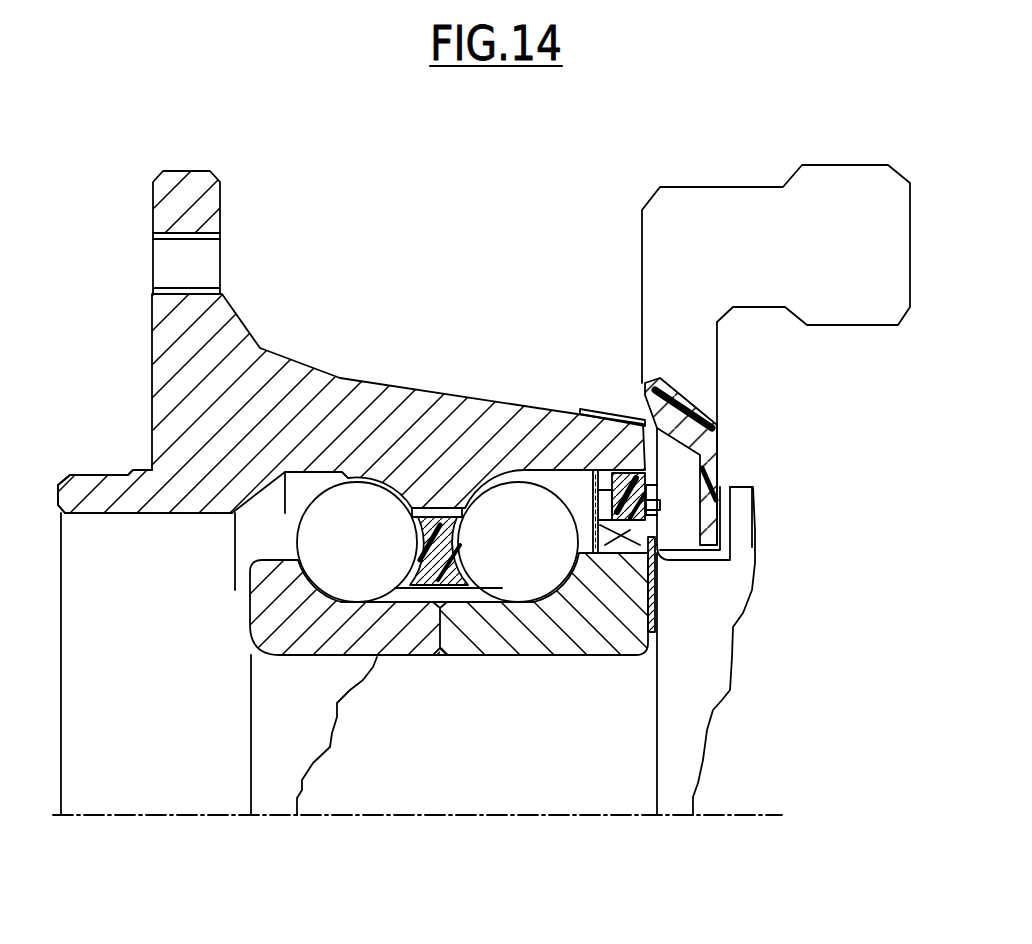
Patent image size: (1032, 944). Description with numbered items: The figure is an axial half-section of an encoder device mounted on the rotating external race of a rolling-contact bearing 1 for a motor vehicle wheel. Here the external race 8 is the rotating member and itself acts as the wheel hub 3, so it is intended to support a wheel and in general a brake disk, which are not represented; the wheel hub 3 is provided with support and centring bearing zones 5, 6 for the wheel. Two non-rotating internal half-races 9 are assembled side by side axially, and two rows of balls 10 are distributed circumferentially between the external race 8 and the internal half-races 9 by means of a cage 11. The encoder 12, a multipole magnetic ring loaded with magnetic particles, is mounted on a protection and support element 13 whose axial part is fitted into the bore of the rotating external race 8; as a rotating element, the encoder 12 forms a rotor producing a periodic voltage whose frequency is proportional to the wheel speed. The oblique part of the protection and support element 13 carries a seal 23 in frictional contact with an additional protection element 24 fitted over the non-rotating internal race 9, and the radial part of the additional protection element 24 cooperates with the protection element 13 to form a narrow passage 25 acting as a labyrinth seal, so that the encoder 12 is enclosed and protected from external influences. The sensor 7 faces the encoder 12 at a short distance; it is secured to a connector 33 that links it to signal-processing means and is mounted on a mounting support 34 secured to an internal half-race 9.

The rolling-contact bearing 1 is at (341, 374).
The wheel hub 3 is at (188, 171).
The support and centring bearing zone 5 is at (153, 217).
The support and centring bearing zone 6 is at (102, 472).
The sensor 7 is at (662, 505).
The external race 8 is at (275, 392).
The internal half-races 9 is at (403, 637).
The balls 10 is at (350, 575).
The cage 11 is at (450, 517).
The encoder 12 is at (622, 473).
The protection and support element 13 is at (650, 492).
The seal 23 is at (657, 558).
The additional protection element 24 is at (567, 537).
The narrow passage 25 is at (590, 472).
The connector 33 is at (722, 213).
The mounting support 34 is at (655, 600).